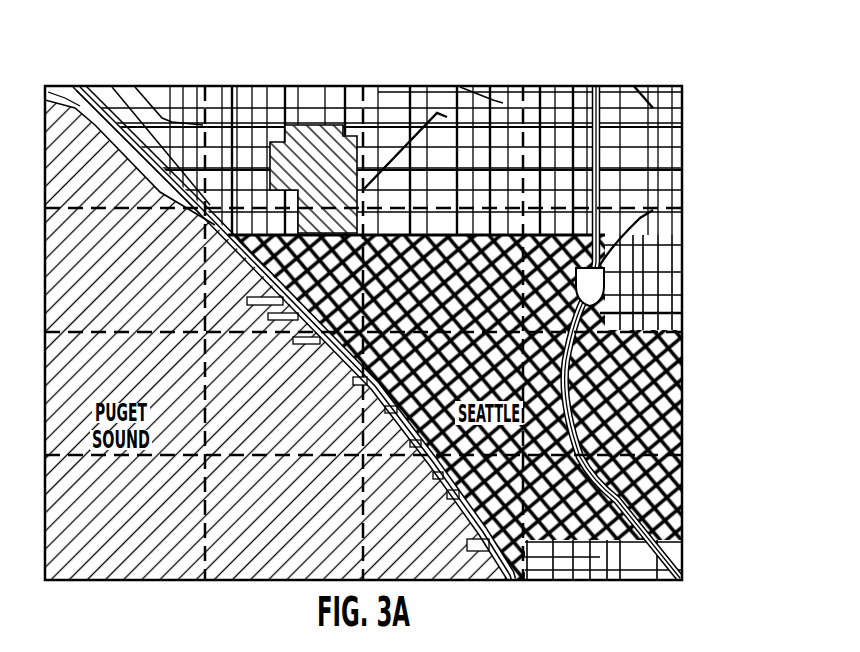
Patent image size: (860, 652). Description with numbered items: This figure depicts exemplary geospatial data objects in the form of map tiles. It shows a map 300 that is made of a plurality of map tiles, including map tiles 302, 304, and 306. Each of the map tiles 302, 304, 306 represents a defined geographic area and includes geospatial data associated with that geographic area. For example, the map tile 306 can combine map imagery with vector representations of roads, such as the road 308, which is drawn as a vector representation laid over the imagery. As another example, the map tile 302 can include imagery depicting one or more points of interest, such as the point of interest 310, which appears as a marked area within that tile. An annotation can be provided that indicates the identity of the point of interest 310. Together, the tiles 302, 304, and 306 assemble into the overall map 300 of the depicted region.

The map 300 is at (632, 66).
The map tile 302 is at (262, 102).
The map tile 304 is at (512, 108).
The map tile 306 is at (665, 323).
The road 308 is at (598, 303).
The point of interest 310 is at (318, 108).